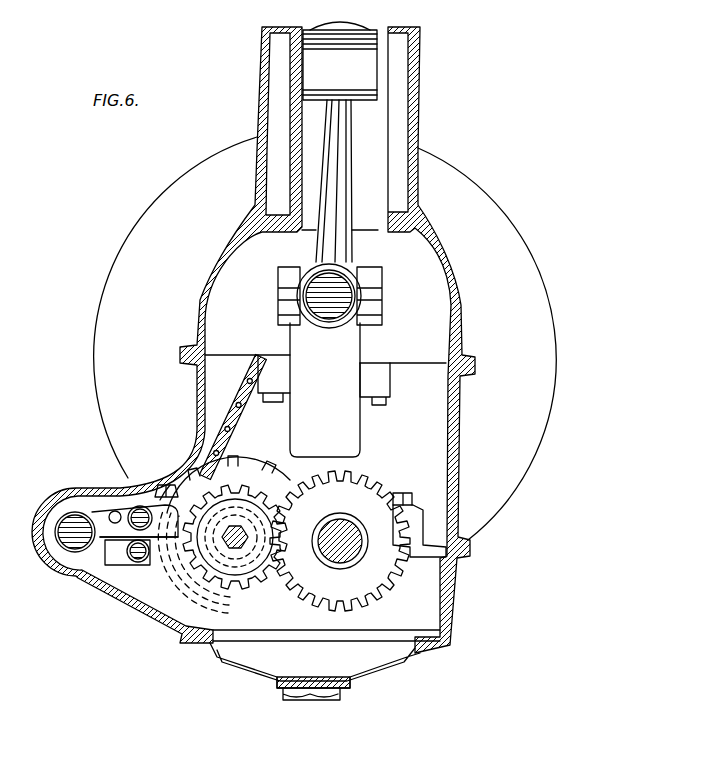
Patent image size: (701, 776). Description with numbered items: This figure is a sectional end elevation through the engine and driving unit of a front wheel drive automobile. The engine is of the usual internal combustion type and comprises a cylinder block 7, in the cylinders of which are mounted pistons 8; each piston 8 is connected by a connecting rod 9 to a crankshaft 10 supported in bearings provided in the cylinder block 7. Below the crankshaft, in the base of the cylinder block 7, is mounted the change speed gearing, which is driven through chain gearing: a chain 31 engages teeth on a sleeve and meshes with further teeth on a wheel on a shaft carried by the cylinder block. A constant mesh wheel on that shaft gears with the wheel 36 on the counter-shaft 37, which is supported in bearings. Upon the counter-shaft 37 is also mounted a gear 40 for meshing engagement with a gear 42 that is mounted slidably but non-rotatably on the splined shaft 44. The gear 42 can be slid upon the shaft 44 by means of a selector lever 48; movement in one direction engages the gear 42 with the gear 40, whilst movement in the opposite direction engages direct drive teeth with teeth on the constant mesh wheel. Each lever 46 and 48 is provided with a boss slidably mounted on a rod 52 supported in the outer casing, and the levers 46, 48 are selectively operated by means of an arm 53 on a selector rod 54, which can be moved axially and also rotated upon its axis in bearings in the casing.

The cylinder block 7 is at (205, 280).
The piston 8 is at (340, 61).
The connecting rod 9 is at (336, 167).
The crankshaft 10 is at (325, 390).
The chain 31 is at (244, 397).
The wheel 36 is at (365, 520).
The counter-shaft 37 is at (367, 552).
The gear 40 is at (397, 494).
The gear 42 is at (234, 487).
The splined shaft 44 is at (247, 547).
The lever 46 is at (110, 560).
The selector lever 48 is at (165, 484).
The rod 52 is at (138, 562).
The arm 53 is at (113, 511).
The selector rod 54 is at (66, 521).